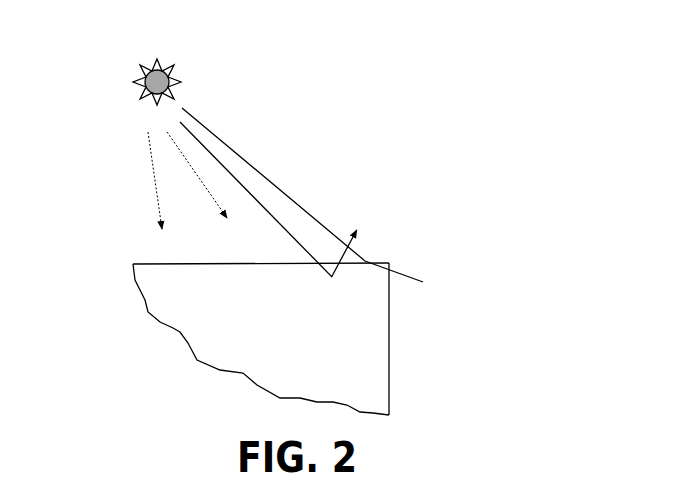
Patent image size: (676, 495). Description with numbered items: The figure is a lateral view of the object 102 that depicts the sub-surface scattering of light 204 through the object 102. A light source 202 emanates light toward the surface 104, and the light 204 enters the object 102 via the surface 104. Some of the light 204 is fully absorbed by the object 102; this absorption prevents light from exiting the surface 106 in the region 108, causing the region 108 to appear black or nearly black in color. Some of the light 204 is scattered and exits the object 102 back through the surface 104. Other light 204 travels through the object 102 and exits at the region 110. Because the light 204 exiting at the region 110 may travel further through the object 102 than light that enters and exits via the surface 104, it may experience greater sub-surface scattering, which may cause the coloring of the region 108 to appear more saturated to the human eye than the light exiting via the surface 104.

The light source 202 is at (119, 77).
The light 204 is at (309, 191).
The surface 104 is at (189, 256).
The object 102 is at (141, 376).
The region 110 is at (406, 263).
The region 108 is at (394, 327).
The surface 106 is at (409, 372).